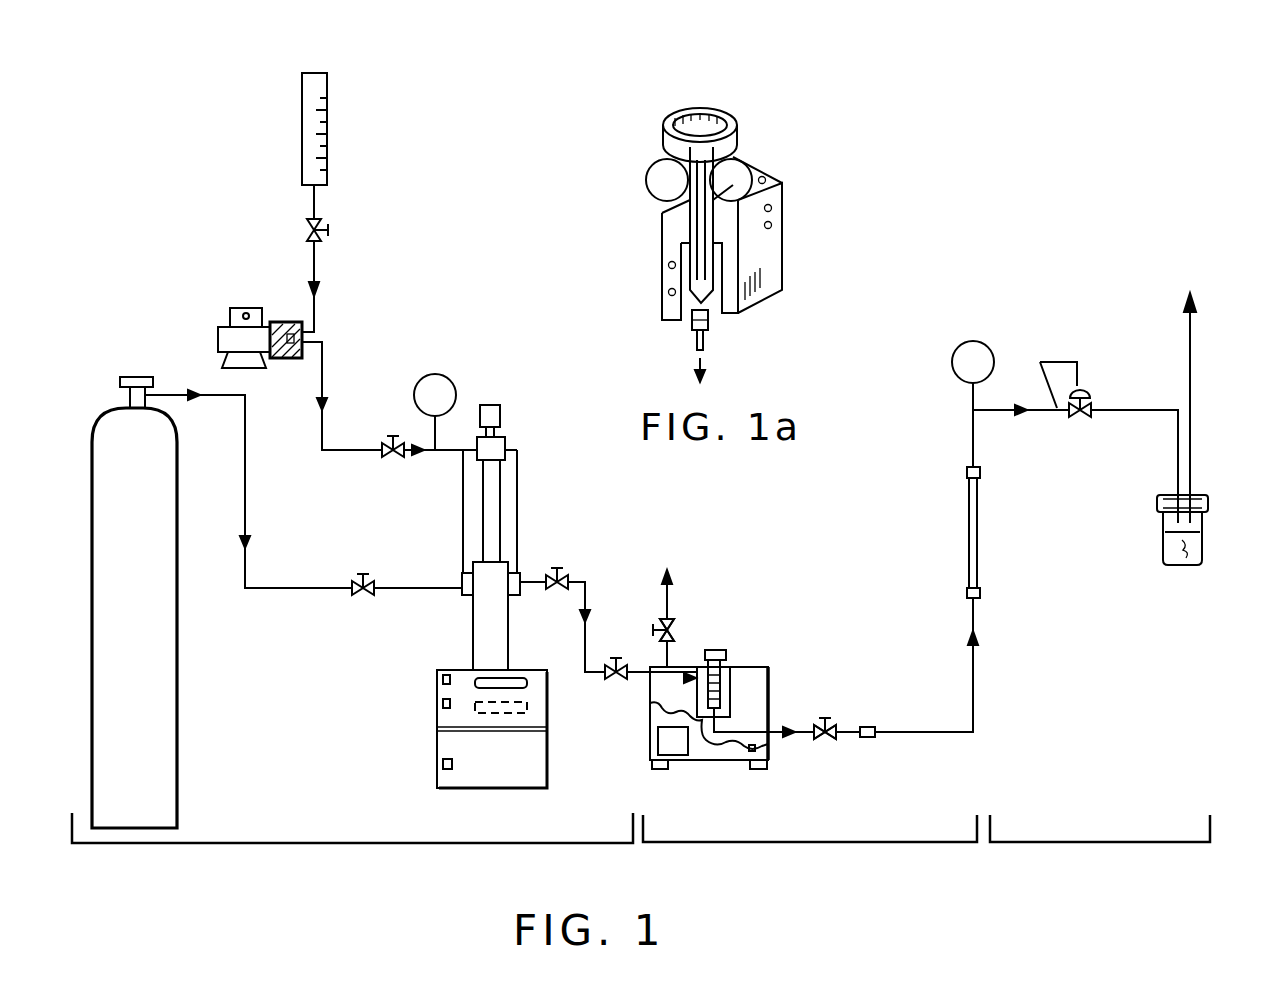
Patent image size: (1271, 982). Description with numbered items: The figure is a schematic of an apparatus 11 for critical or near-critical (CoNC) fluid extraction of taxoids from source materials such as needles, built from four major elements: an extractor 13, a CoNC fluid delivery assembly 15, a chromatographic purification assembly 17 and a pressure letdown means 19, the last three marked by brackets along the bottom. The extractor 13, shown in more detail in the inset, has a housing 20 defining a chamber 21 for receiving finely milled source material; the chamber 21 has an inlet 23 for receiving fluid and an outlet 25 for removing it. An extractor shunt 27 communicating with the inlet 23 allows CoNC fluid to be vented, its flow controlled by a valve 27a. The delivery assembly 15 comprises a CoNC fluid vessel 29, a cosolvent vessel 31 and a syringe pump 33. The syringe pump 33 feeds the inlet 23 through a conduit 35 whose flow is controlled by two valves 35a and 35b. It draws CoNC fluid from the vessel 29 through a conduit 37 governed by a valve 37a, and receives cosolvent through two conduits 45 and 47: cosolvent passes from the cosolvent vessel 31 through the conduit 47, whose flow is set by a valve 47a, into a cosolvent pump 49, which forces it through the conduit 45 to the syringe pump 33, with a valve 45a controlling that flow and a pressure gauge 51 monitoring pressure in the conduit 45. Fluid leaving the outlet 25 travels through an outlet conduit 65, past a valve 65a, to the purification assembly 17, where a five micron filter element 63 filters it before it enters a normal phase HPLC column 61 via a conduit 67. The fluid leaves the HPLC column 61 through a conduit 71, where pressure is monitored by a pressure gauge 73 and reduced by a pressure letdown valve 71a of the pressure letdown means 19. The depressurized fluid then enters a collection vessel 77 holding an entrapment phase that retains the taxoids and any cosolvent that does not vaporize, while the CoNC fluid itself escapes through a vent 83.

In FIG. 1, the apparatus 11 is at (1122, 268).
In FIG. 1, the extractor 13 is at (705, 762).
In FIG. 1, the CoNC fluid delivery assembly 15 is at (352, 844).
In FIG. 1, the chromatographic purification assembly 17 is at (810, 845).
In FIG. 1, the pressure letdown means 19 is at (1100, 845).
In FIG. 1, the housing 20 is at (712, 688).
In FIG. 1A, the housing 20 is at (770, 238).
In FIG. 1A, the chamber 21 is at (720, 296).
In FIG. 1A, the inlet 23 is at (707, 127).
In FIG. 1A, the outlet 25 is at (695, 342).
In FIG. 1, the extractor shunt 27 is at (669, 655).
In FIG. 1, the valve 27a is at (663, 620).
In FIG. 1, the CoNC fluid vessel 29 is at (165, 693).
In FIG. 1, the cosolvent vessel 31 is at (328, 131).
In FIG. 1, the syringe pump 33 is at (430, 742).
In FIG. 1, the conduit 35 is at (597, 576).
In FIG. 1, the valve 35a is at (557, 575).
In FIG. 1, the valve 35b is at (616, 680).
In FIG. 1, the conduit 37 is at (278, 593).
In FIG. 1, the valve 37a is at (363, 596).
In FIG. 1, the conduit 45 is at (323, 365).
In FIG. 1, the valve 45a is at (392, 458).
In FIG. 1, the conduit 47 is at (322, 271).
In FIG. 1, the valve 47a is at (332, 232).
In FIG. 1, the cosolvent pump 49 is at (219, 333).
In FIG. 1, the pressure gauge 51 is at (443, 374).
In FIG. 1, the HPLC column 61 is at (977, 513).
In FIG. 1, the filter element 63 is at (868, 727).
In FIG. 1, the outlet conduit 65 is at (800, 751).
In FIG. 1, the valve 65a is at (825, 740).
In FIG. 1, the conduit 67 is at (897, 667).
In FIG. 1, the conduit 71 is at (973, 447).
In FIG. 1, the pressure letdown valve 71a is at (1090, 391).
In FIG. 1, the pressure gauge 73 is at (1003, 342).
In FIG. 1, the collection vessel 77 is at (1202, 540).
In FIG. 1, the vent 83 is at (1195, 368).